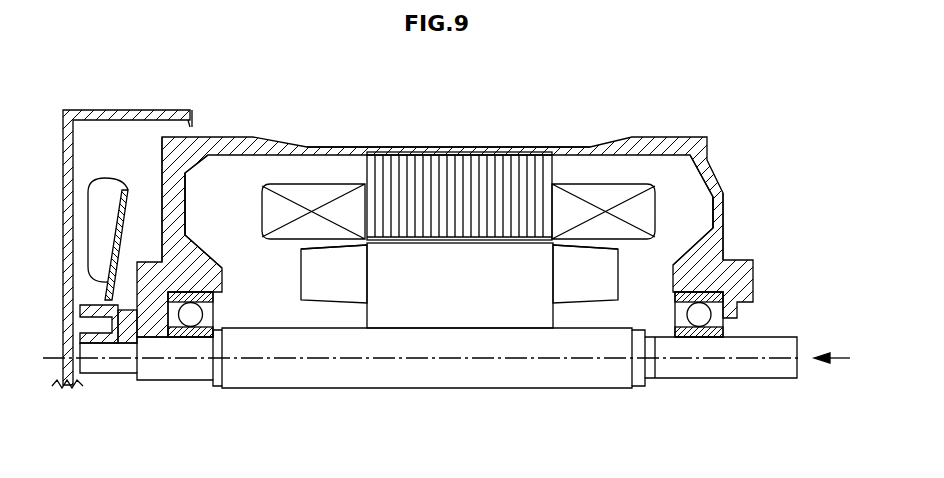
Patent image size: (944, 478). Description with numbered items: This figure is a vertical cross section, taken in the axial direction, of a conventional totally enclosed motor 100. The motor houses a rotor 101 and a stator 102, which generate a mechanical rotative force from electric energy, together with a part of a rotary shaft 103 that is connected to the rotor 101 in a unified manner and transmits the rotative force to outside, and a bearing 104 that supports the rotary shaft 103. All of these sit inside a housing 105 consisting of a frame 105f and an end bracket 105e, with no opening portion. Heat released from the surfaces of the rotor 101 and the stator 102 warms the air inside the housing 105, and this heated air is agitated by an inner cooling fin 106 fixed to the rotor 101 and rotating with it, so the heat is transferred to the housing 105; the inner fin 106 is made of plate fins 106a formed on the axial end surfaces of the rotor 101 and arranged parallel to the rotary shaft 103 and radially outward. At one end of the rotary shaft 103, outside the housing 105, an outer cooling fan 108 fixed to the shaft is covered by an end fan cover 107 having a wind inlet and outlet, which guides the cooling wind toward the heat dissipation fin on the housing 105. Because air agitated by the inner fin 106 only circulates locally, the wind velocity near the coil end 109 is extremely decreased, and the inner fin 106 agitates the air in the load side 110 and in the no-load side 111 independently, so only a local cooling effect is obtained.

The totally enclosed motor 100 is at (777, 147).
The rotor 101 is at (463, 280).
The stator 102 is at (455, 148).
The rotary shaft 103 is at (753, 372).
The bearing 104 is at (697, 312).
The housing 105 is at (718, 182).
The end bracket 105e is at (718, 215).
The frame 105f is at (512, 148).
The inner cooling fin 106 is at (337, 308).
The plate fin 106a is at (320, 282).
The end fan cover 107 is at (150, 110).
The outer cooling fan 108 is at (108, 200).
The coil end 109 is at (352, 210).
The load side 110 is at (682, 182).
The no-load side 111 is at (207, 190).